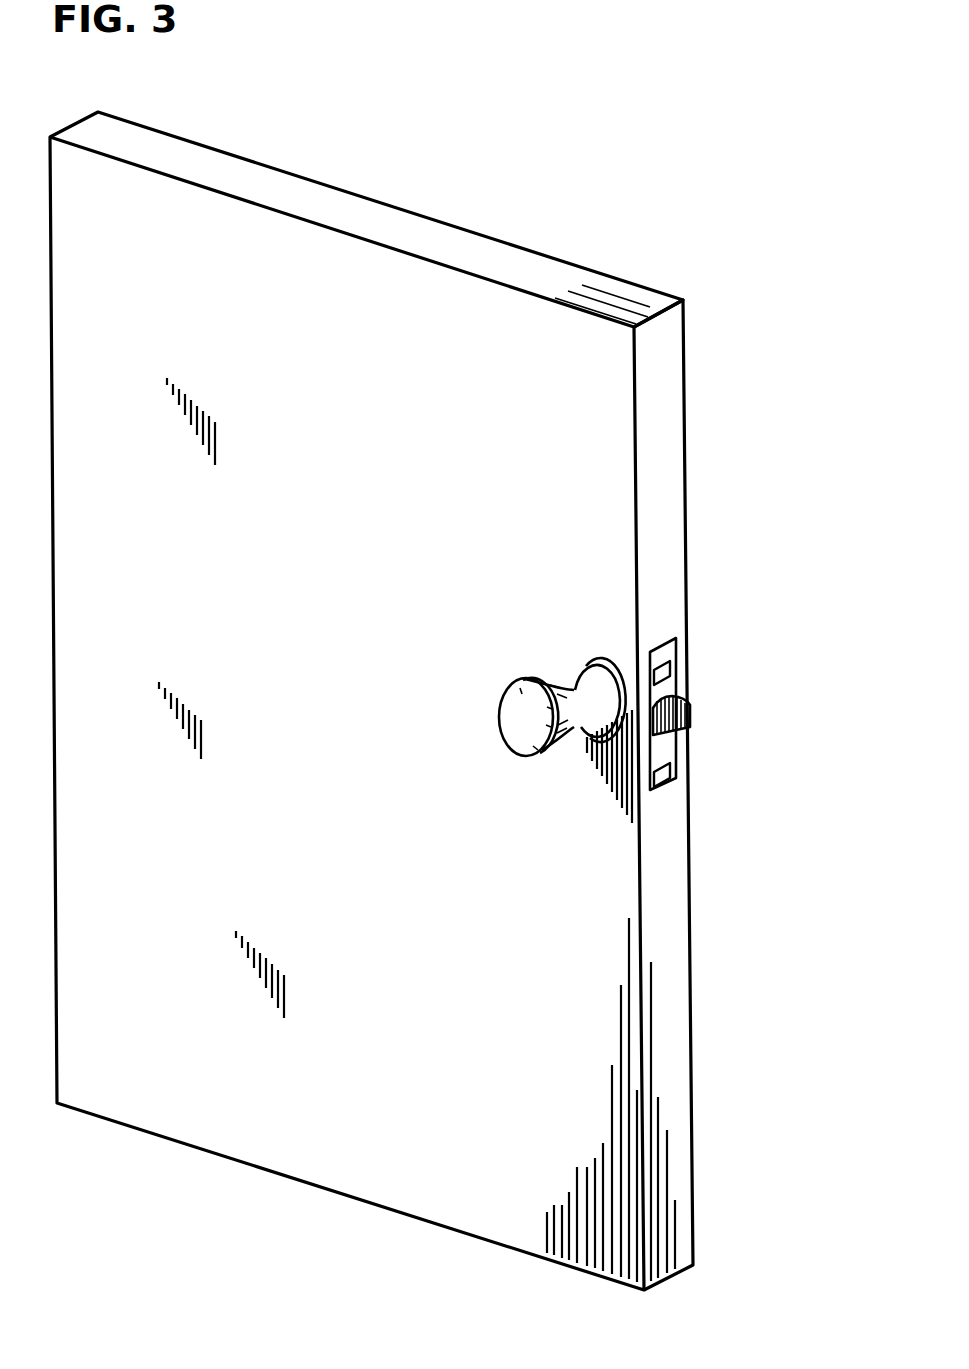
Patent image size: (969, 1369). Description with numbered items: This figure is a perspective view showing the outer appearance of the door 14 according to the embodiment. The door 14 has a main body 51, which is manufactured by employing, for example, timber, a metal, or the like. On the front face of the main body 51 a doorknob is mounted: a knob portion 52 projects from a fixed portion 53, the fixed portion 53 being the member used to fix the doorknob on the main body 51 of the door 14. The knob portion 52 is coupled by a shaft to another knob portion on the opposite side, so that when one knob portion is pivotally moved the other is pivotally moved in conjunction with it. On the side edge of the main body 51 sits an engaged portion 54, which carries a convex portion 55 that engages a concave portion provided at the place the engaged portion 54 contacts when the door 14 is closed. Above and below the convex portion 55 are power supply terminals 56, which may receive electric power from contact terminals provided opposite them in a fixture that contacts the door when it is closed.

The door 14 is at (472, 220).
The main body 51 is at (683, 332).
The knob portion 52 is at (521, 680).
The fixed portion 53 is at (595, 662).
The engaged portion 54 is at (687, 637).
The convex portion 55 is at (690, 722).
The power supply terminals 56 is at (672, 669).